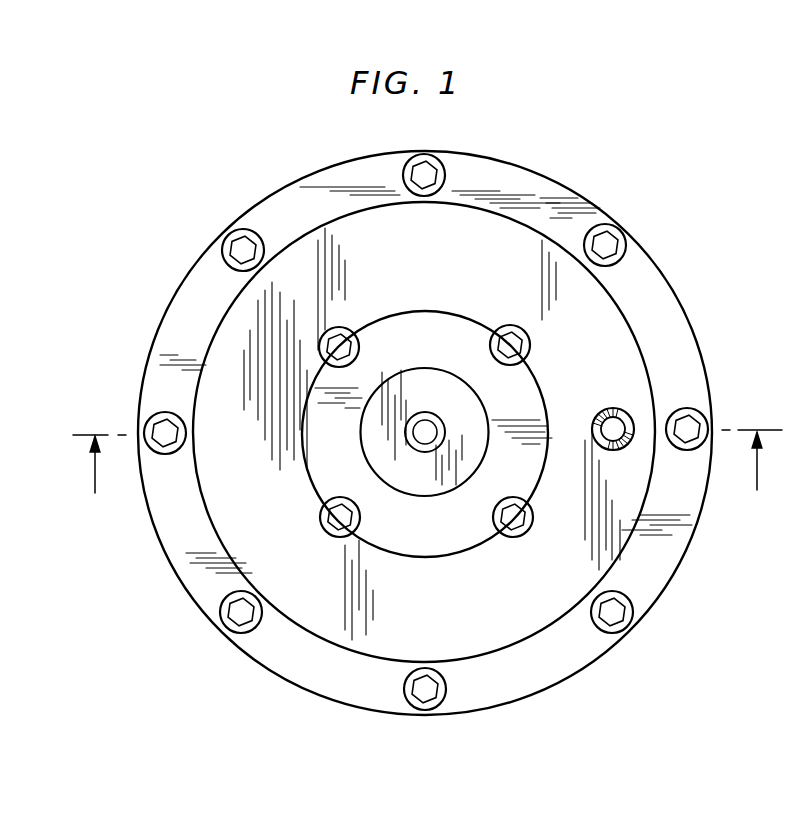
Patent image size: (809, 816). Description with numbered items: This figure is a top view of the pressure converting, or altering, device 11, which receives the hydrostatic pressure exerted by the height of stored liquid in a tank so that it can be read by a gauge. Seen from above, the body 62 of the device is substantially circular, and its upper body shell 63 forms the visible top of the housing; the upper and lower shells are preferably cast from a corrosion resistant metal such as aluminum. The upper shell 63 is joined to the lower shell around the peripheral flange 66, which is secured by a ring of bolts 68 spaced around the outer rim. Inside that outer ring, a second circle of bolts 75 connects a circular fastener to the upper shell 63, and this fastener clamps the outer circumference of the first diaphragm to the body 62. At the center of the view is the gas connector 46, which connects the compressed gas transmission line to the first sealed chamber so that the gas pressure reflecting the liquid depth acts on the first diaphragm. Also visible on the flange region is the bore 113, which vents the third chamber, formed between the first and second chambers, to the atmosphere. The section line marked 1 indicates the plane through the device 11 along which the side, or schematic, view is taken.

The pressure converting device 11 is at (578, 163).
The body 62 is at (180, 285).
The upper body shell 63 is at (262, 212).
The peripheral flange 66 is at (635, 252).
The bolts 68 is at (628, 615).
The bore 113 is at (625, 415).
The bolts 75 is at (345, 330).
The gas connector 46 is at (432, 414).
The section line 1- 1 is at (427, 480).